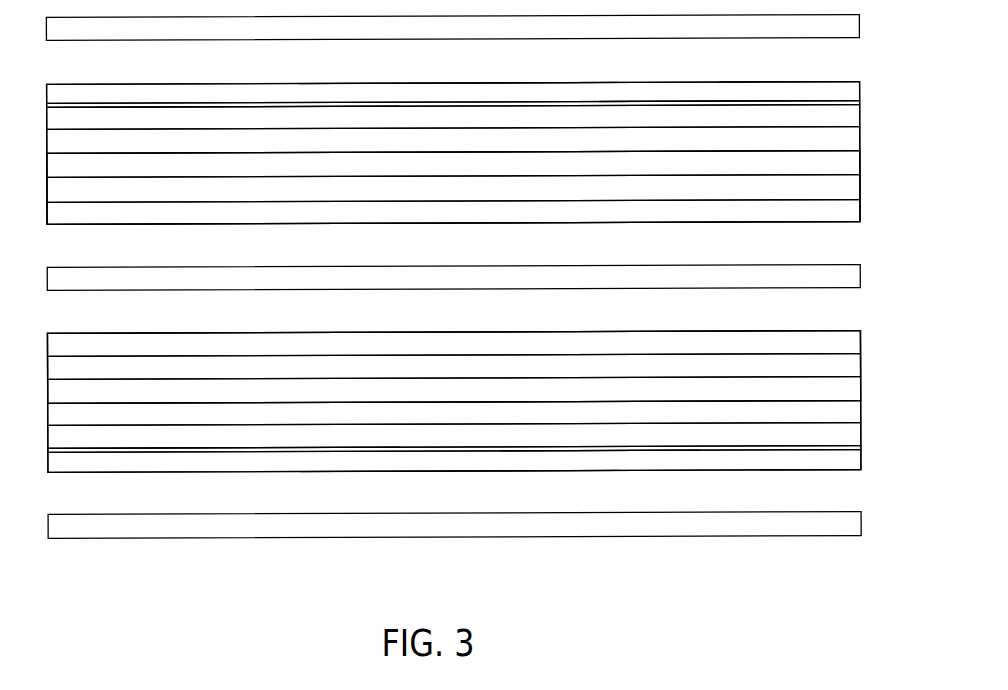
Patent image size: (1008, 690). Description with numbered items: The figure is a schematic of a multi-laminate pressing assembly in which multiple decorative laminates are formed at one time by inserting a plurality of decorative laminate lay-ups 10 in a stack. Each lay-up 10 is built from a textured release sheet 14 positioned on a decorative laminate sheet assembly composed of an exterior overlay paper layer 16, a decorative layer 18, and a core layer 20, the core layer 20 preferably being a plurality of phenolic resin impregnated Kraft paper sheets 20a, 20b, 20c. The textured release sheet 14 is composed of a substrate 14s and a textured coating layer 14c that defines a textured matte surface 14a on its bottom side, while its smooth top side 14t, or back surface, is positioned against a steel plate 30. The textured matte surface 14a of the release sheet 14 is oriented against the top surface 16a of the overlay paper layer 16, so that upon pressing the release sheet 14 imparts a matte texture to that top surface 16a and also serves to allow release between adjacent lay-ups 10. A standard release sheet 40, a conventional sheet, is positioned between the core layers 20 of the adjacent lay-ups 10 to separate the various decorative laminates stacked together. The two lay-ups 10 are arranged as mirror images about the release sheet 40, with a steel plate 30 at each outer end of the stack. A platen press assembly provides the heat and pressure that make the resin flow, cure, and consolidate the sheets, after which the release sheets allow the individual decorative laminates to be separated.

The decorative laminate lay-up 10 is at (889, 96).
The textured release sheet 14 is at (454, 277).
The textured matte surface 14a is at (684, 100).
The textured coating layer 14c is at (53, 104).
The substrate 14s is at (793, 87).
The top side 14t is at (460, 82).
The overlay paper layer 16 is at (454, 277).
The top surface 16a is at (238, 105).
The decorative layer 18 is at (454, 276).
The core layer 20 is at (874, 151).
The phenolic resin impregnated sheet 20a is at (454, 277).
The phenolic resin impregnated sheet 20b is at (454, 277).
The phenolic resin impregnated sheet 20c is at (454, 278).
The steel plate 30 is at (453, 277).
The standard release sheet 40 is at (453, 278).